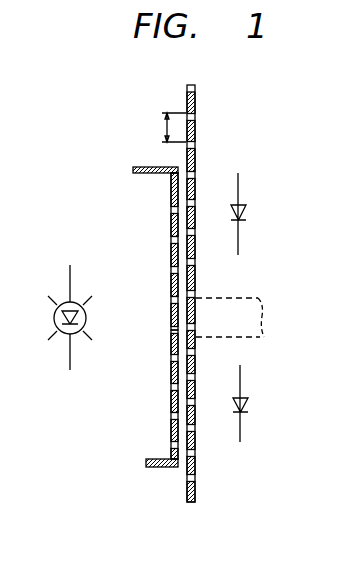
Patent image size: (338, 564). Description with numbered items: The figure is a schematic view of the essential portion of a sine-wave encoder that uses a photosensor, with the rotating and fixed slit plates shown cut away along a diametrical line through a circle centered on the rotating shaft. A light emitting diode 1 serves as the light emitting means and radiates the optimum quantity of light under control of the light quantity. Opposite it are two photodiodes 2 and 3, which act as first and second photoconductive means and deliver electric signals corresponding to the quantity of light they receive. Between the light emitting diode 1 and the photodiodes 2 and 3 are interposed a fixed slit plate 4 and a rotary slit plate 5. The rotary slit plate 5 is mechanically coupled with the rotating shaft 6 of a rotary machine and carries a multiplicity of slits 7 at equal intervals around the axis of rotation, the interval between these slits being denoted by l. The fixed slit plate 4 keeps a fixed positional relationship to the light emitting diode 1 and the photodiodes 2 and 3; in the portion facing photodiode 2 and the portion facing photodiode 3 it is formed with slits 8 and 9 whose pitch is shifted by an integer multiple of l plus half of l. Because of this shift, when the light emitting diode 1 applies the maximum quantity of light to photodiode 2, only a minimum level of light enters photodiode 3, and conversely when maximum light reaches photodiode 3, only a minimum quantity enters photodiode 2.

The light emitting diode 1 is at (87, 318).
The photodiode 2 is at (247, 213).
The photodiode 3 is at (249, 410).
The fixed slit plate 4 is at (165, 468).
The rotary slit plate 5 is at (196, 448).
The rotating shaft 6 is at (251, 298).
The slits 7 is at (212, 480).
The slits 8 is at (170, 272).
The slits 9 is at (170, 445).